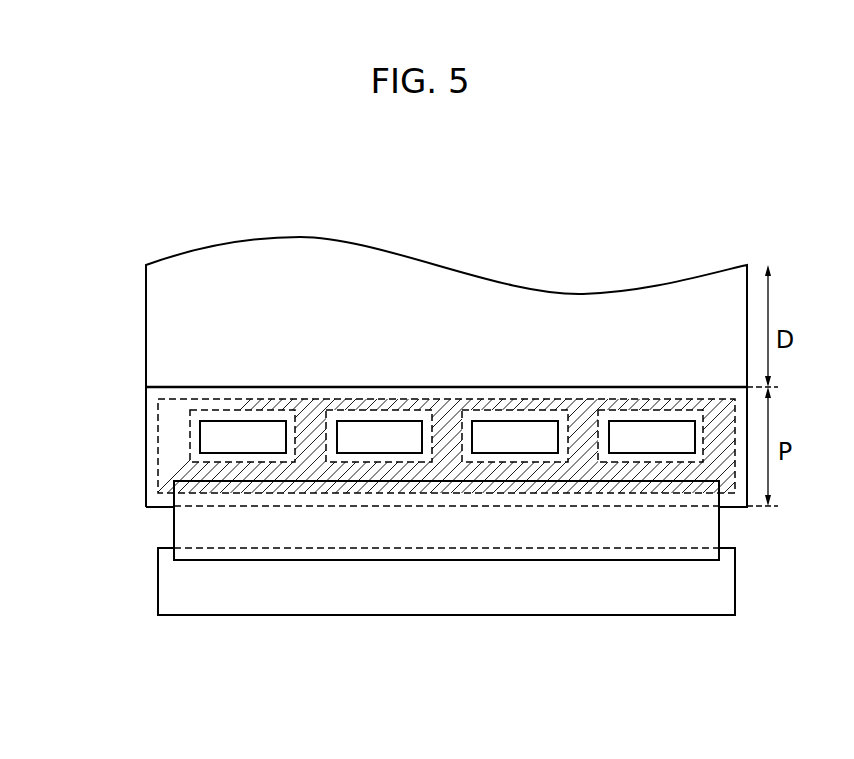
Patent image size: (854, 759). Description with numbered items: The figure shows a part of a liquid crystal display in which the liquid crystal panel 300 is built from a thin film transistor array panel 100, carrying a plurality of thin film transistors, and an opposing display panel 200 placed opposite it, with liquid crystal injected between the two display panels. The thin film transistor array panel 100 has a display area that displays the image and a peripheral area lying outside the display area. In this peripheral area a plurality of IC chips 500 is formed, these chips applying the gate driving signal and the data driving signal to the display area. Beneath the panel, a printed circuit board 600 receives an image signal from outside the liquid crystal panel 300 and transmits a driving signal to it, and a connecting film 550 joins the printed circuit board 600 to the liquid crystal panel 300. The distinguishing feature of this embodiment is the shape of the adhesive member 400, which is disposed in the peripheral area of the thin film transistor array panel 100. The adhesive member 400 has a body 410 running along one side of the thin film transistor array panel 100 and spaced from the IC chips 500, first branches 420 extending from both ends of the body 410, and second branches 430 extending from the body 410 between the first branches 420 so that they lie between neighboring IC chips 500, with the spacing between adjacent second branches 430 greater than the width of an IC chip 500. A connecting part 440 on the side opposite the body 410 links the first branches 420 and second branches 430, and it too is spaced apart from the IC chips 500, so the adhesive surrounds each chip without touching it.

The thin film transistor array panel 100 is at (467, 417).
The opposing display panel 200 is at (154, 301).
The liquid crystal panel 300 is at (443, 373).
The adhesive member 400 is at (628, 325).
The body 410 is at (720, 473).
The first branch 420 is at (724, 310).
The second branch 430 is at (582, 428).
The connecting part 440 is at (532, 407).
The IC chip 500 is at (353, 420).
The connecting film 550 is at (392, 561).
The printed circuit board 600 is at (527, 600).